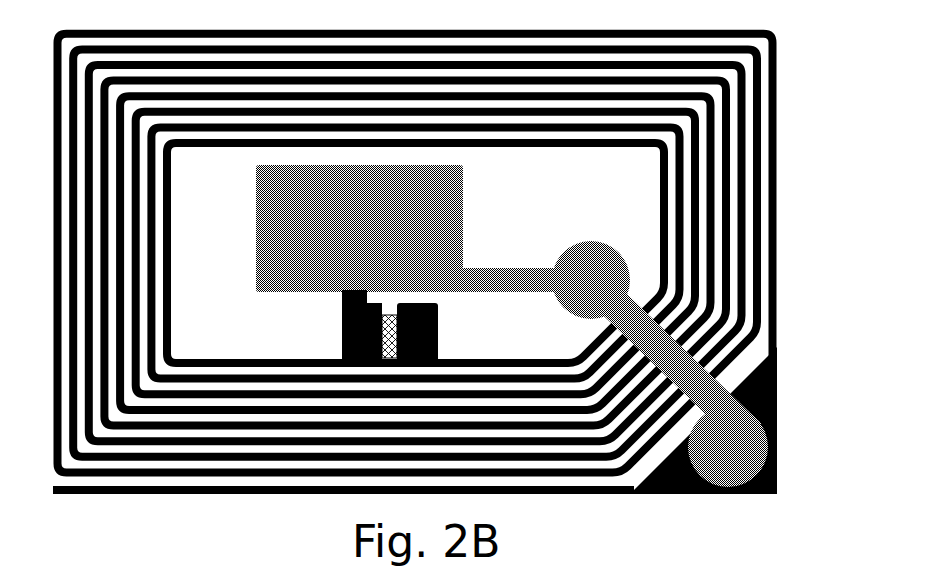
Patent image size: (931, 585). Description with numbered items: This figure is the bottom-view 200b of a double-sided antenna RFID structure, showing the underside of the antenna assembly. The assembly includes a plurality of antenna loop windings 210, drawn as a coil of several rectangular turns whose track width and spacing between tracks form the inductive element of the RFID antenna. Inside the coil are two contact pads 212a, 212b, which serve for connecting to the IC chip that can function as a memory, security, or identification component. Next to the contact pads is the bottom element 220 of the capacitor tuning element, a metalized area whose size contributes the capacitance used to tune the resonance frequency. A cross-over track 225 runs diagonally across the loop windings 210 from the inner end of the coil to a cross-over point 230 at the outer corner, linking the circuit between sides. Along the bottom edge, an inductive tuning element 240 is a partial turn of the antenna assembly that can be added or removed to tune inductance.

The bottom-view 200b is at (463, 288).
The antenna loop windings 210 is at (802, 203).
The bottom element 220 is at (256, 202).
The contact pad 212a is at (342, 326).
The contact pad 212b is at (440, 334).
The cross-over track 225 is at (636, 326).
The cross-over point 230 is at (762, 493).
The inductive tuning element 240 is at (156, 494).